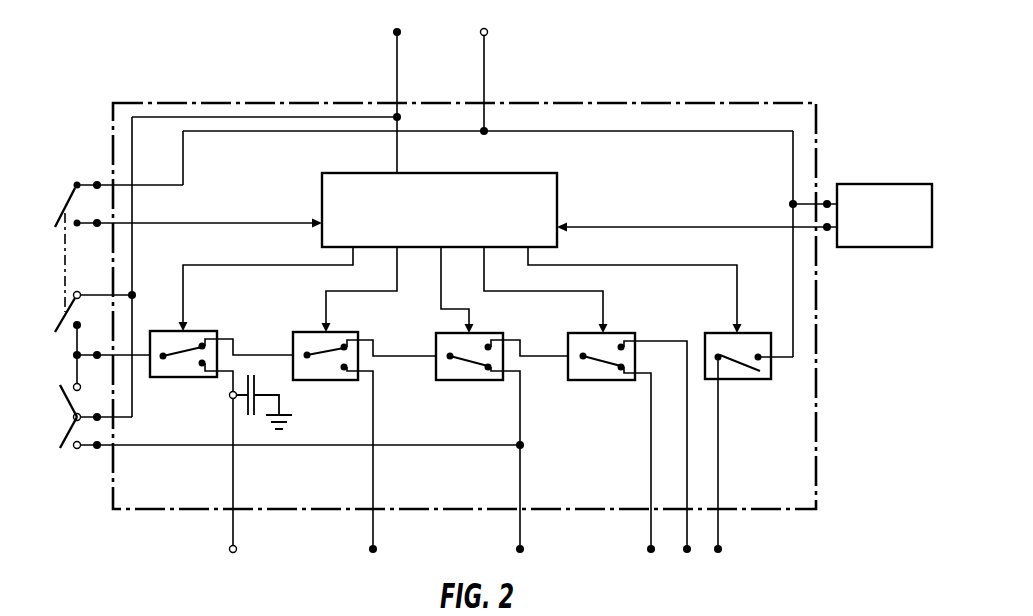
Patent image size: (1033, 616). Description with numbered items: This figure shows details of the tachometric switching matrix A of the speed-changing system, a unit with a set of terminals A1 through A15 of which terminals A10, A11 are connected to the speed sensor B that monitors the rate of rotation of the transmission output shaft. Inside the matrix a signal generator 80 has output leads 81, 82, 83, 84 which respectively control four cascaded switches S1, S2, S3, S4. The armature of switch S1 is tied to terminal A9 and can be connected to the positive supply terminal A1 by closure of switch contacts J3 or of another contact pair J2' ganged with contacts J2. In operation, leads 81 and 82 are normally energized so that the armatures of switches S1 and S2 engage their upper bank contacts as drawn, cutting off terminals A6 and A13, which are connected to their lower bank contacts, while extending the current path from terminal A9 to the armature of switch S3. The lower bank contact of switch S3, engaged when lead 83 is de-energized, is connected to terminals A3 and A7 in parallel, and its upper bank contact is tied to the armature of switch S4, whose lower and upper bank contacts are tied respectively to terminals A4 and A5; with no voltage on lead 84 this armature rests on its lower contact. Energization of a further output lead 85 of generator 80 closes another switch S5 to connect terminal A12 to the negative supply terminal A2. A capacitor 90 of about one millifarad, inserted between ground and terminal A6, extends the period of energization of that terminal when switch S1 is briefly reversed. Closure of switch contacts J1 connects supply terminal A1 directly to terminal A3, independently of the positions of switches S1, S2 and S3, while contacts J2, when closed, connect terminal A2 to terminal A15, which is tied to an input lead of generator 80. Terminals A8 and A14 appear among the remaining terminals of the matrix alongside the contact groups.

The tachometric switching matrix A is at (735, 103).
The speed sensor B is at (916, 184).
The signal generator 80 is at (557, 186).
The output lead 81 is at (250, 267).
The output lead 82 is at (374, 292).
The output lead 83 is at (470, 312).
The output lead 84 is at (570, 293).
The further output lead 85 is at (700, 267).
The capacitor 90 is at (251, 416).
The switch S1 is at (172, 378).
The switch S2 is at (333, 381).
The switch S3 is at (470, 381).
The switch S4 is at (602, 381).
The switch S5 is at (748, 380).
The switch contacts J1 is at (66, 438).
The switch contacts J2 is at (52, 242).
The contact pair J2' is at (76, 307).
The switch contacts J3 is at (66, 394).
The positive supply terminal A1 is at (393, 34).
The negative supply terminal A2 is at (488, 35).
The terminal A3 is at (524, 550).
The terminal A4 is at (647, 550).
The terminal A5 is at (687, 553).
The terminal A6 is at (237, 550).
The terminal A7 is at (97, 450).
The terminal A8 is at (97, 413).
The terminal A9 is at (97, 352).
The terminal A10 is at (827, 232).
The terminal A11 is at (827, 200).
The terminal A12 is at (722, 550).
The terminal A13 is at (377, 550).
The terminal A14 is at (96, 182).
The terminal A15 is at (96, 228).